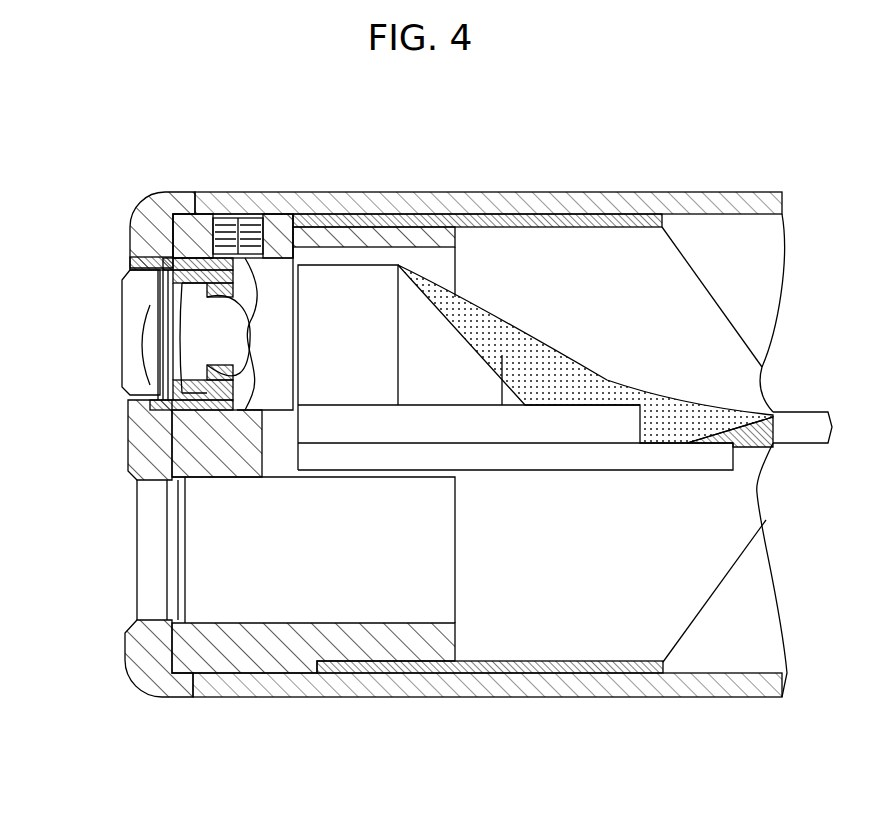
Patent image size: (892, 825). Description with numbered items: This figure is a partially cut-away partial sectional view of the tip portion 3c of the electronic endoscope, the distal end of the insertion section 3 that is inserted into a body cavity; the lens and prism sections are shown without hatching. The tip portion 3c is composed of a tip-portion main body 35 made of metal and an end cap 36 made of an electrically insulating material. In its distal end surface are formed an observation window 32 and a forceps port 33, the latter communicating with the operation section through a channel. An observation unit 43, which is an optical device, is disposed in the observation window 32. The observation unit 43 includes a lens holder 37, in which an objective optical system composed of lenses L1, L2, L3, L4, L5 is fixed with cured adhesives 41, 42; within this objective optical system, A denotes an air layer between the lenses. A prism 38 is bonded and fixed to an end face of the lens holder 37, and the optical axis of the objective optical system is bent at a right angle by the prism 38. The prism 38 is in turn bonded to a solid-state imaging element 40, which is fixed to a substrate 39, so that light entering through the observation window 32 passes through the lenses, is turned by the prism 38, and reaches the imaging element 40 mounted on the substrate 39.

The insertion section 3 is at (619, 160).
The tip portion 3c is at (450, 192).
The observation window 32 is at (100, 445).
The forceps port 33 is at (198, 565).
The tip-portion main body 35 is at (275, 692).
The end cap 36 is at (163, 210).
The lens holder 37 is at (132, 478).
The prism 38 is at (460, 353).
The substrate 39 is at (582, 465).
The solid-state imaging element 40 is at (518, 432).
The cured adhesive 41 is at (158, 393).
The cured adhesive 42 is at (160, 273).
The observation unit 43 is at (155, 266).
The lens L1 is at (135, 303).
The lens L2 is at (160, 355).
The lens L3 is at (197, 300).
The lens L4 is at (233, 325).
The lens L5 is at (168, 318).
The air layer A is at (150, 340).